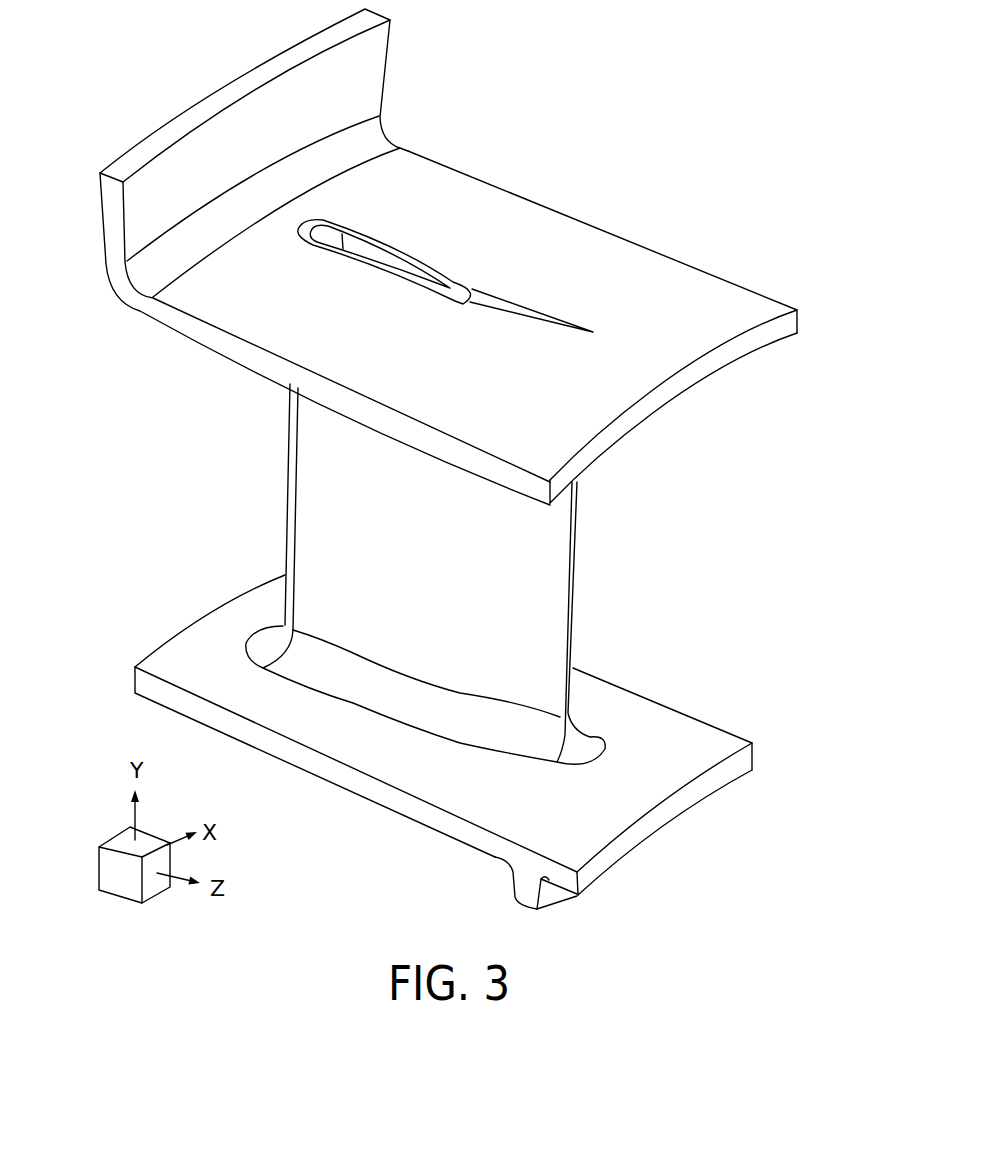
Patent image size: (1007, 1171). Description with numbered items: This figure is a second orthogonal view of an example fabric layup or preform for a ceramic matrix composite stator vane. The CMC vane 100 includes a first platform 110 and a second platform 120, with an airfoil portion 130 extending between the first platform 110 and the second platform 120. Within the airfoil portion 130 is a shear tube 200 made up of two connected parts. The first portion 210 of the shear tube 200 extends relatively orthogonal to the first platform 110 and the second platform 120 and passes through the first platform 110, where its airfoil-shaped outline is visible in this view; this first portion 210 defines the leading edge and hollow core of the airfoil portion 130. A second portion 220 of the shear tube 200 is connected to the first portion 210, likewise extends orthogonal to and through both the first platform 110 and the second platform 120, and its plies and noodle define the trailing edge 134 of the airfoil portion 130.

The CMC vane 100 is at (693, 53).
The first platform 110 is at (527, 200).
The second platform 120 is at (415, 820).
The airfoil portion 130 is at (285, 438).
The trailing edge 134 is at (573, 623).
The shear tube 200 is at (380, 273).
The first portion of the shear tube 210 is at (342, 235).
The second portion of the shear tube 220 is at (508, 305).